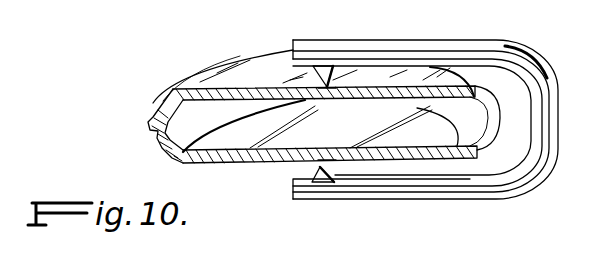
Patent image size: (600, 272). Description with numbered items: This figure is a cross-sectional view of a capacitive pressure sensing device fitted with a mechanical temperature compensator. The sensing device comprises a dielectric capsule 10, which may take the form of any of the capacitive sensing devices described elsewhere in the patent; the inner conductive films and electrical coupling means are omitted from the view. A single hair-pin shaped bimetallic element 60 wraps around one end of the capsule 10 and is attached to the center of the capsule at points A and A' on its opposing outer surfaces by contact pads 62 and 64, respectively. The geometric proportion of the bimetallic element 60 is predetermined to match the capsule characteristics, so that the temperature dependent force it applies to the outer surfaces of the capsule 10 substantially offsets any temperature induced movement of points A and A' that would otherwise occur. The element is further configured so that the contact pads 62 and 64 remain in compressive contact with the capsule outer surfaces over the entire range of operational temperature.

The capsule 10 is at (200, 93).
The bimetallic element 60 is at (490, 70).
The contact pad 62 is at (316, 81).
The contact pad 64 is at (316, 170).
The attachment point A is at (363, 48).
The attachment point A' is at (342, 141).